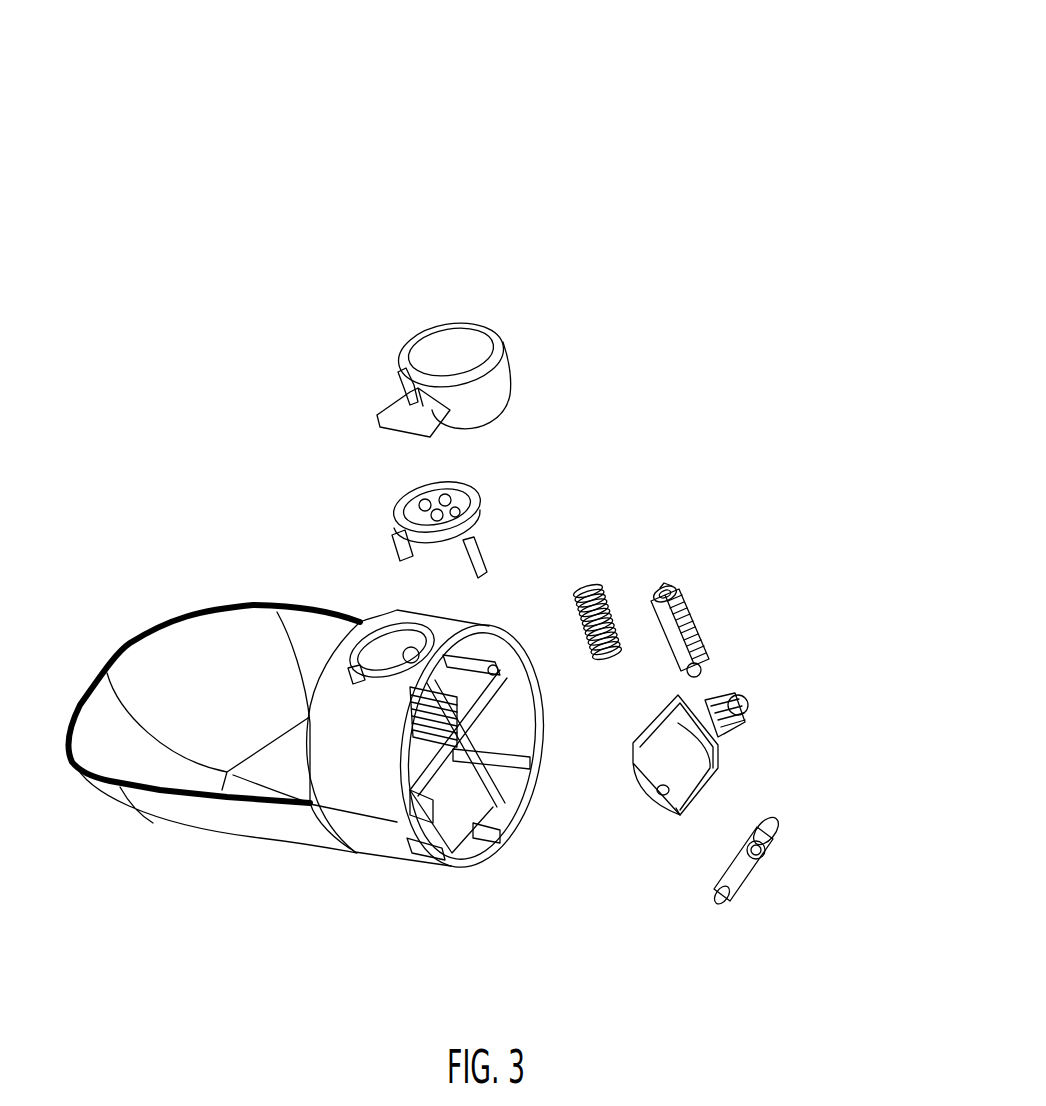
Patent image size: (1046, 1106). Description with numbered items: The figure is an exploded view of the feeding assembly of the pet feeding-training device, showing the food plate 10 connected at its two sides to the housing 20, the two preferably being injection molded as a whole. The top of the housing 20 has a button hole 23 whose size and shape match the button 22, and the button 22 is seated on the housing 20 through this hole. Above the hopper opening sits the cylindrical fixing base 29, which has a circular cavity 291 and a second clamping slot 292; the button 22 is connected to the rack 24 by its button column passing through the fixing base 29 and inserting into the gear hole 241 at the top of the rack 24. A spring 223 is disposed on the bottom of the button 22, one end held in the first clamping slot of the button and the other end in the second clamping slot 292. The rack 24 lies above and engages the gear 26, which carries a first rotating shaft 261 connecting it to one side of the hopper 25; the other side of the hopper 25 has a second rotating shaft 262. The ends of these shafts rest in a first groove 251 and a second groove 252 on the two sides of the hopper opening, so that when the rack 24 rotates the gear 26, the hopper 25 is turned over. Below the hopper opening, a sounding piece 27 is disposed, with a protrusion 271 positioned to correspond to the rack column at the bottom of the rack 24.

The food plate 10 is at (220, 635).
The housing 20 is at (382, 840).
The button 22 is at (478, 503).
The button hole 23 is at (388, 637).
The rack 24 is at (710, 650).
The hopper 25 is at (682, 818).
The gear 26 is at (745, 711).
The sounding piece 27 is at (747, 913).
The fixing base 29 is at (472, 408).
The spring 223 is at (603, 597).
The gear hole 241 is at (683, 593).
The first groove 251 is at (467, 763).
The second groove 252 is at (420, 855).
The first rotating shaft 261 is at (717, 740).
The second rotating shaft 262 is at (657, 791).
The protrusion 271 is at (752, 853).
The circular cavity 291 is at (423, 340).
The second clamping slot 292 is at (457, 365).